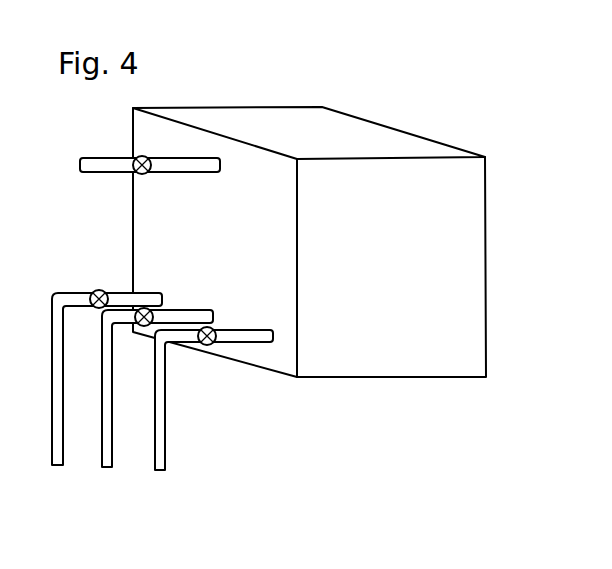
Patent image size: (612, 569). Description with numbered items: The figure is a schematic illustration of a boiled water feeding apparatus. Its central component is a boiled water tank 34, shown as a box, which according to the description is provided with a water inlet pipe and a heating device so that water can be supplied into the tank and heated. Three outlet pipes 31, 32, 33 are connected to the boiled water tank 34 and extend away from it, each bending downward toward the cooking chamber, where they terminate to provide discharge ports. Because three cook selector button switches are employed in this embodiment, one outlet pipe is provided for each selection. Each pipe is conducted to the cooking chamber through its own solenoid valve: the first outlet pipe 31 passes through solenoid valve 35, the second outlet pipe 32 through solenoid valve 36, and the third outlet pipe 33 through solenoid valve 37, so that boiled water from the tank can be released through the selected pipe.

The outlet pipe 31 is at (52, 412).
The outlet pipe 32 is at (112, 452).
The outlet pipe 33 is at (165, 452).
The boiled water tank 34 is at (486, 271).
The solenoid valve 35 is at (95, 289).
The solenoid valve 36 is at (157, 308).
The solenoid valve 37 is at (207, 346).